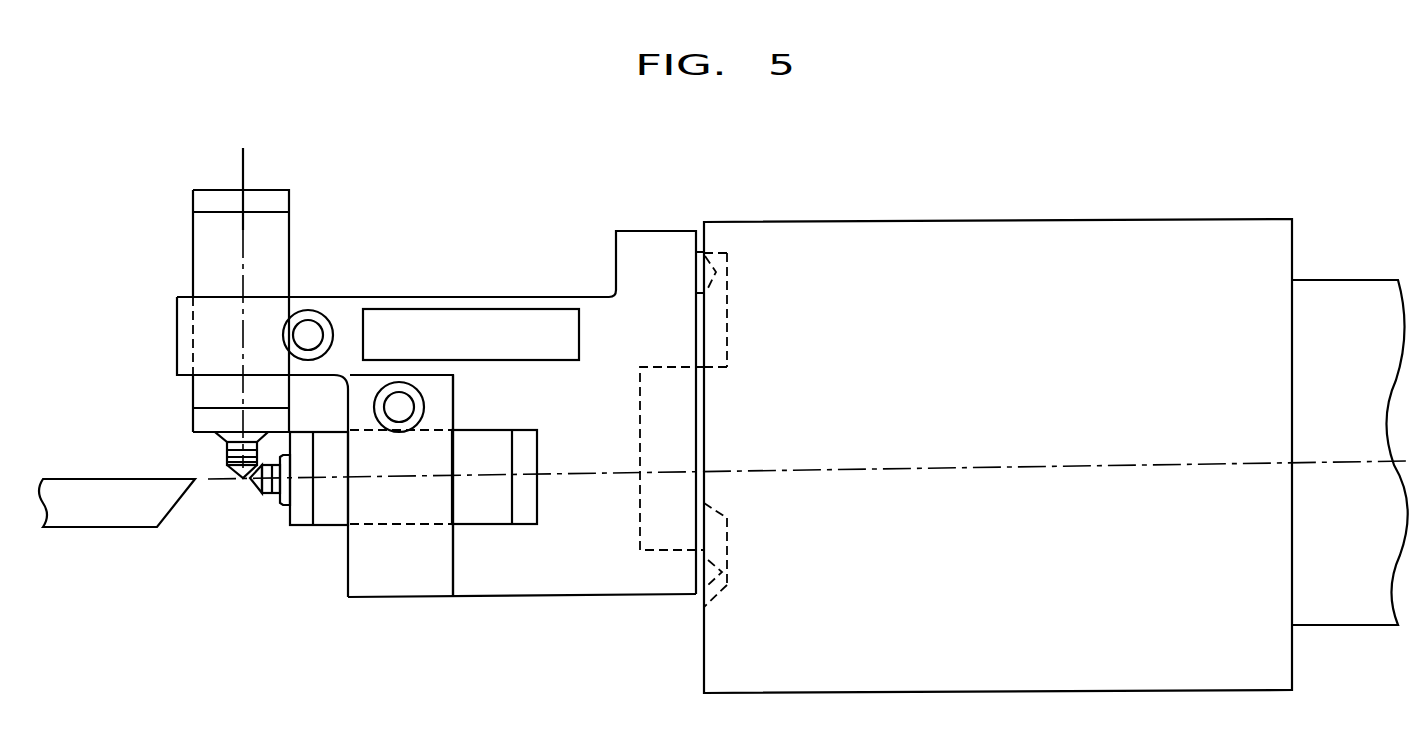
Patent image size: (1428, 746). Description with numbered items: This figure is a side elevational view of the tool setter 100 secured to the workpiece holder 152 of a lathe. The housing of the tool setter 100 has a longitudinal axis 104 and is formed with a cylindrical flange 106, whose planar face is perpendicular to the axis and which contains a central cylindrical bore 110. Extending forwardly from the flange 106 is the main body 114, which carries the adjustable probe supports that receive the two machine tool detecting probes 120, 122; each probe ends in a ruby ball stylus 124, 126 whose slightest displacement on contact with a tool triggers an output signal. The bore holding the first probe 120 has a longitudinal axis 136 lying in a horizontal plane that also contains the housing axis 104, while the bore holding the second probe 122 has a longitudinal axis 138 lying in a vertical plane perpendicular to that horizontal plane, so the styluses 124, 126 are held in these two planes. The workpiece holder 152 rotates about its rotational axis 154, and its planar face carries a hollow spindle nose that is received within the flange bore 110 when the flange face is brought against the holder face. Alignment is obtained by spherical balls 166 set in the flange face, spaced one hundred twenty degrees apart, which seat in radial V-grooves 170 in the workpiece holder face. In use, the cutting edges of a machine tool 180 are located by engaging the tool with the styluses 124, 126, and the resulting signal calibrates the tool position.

The tool setter 100 is at (331, 291).
The longitudinal axis 104 is at (388, 503).
The cylindrical flange 106 is at (651, 231).
The central cylindrical bore 110 is at (673, 367).
The main body 114 is at (520, 598).
The machine tool detecting probe 120 is at (325, 507).
The machine tool detecting probe 122 is at (208, 262).
The ruby ball stylus 124 is at (243, 479).
The ruby ball stylus 126 is at (243, 478).
The longitudinal axis 136 is at (548, 475).
The longitudinal axis 138 is at (243, 177).
The workpiece holder 152 is at (869, 217).
The rotational axis 154 is at (975, 467).
The spherical ball 166 is at (720, 253).
The radial V-groove 170 is at (727, 298).
The machine tool 180 is at (128, 506).